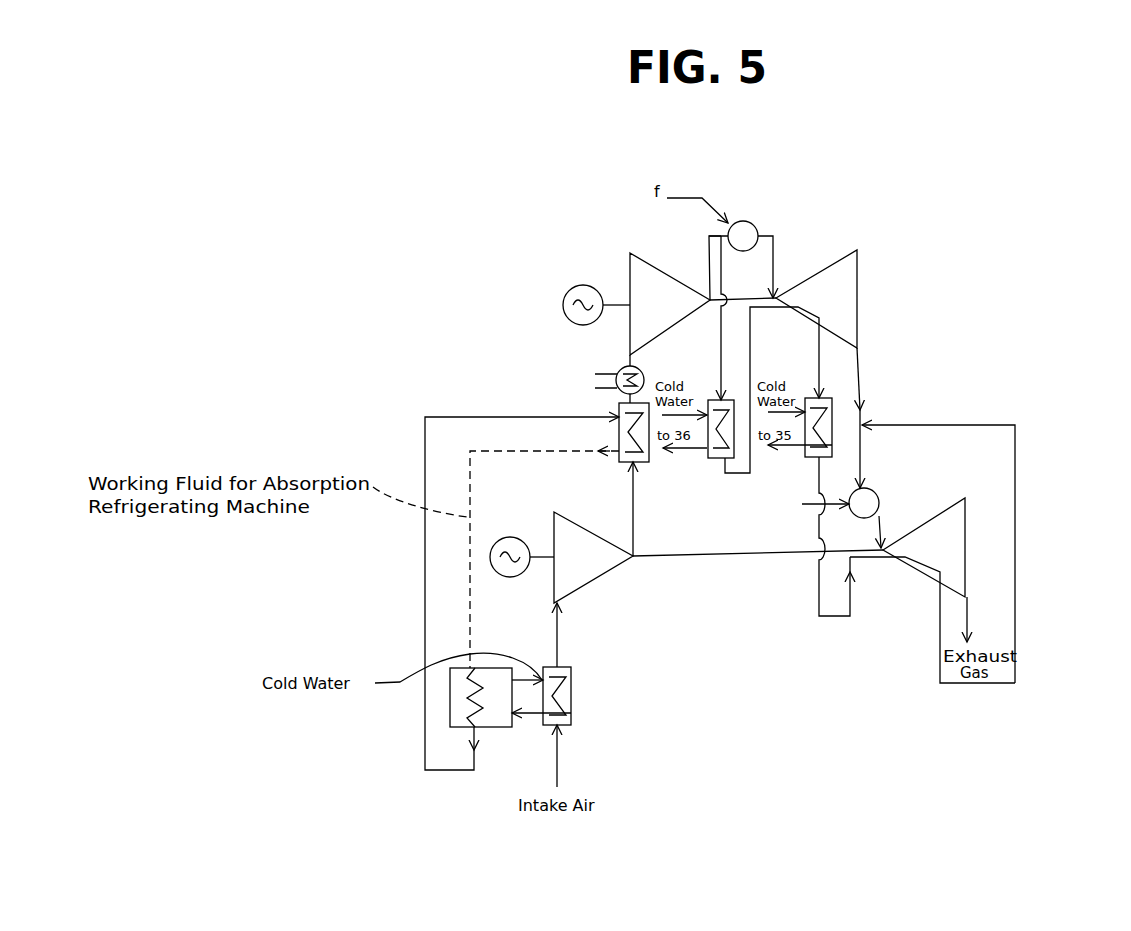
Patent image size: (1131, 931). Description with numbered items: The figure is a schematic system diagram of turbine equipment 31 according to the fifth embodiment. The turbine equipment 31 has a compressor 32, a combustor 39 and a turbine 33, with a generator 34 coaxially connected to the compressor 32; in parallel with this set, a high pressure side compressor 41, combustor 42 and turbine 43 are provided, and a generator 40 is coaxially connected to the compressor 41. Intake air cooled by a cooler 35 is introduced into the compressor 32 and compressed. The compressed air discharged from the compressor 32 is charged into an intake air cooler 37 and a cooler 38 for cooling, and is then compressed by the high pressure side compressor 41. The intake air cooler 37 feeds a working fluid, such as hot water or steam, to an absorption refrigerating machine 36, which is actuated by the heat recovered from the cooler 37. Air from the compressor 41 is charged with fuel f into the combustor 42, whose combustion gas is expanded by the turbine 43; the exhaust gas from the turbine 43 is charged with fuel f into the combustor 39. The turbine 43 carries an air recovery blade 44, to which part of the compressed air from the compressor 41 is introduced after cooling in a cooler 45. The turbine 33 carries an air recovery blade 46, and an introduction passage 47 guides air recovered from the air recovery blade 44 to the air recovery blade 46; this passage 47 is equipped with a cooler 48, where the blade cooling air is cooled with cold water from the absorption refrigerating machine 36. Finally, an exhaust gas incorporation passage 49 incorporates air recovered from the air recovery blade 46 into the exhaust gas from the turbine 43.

The turbine equipment 31 is at (775, 577).
The compressor 32 is at (578, 543).
The turbine 33 is at (948, 540).
The generator 34 is at (490, 552).
The cooler 35 is at (544, 667).
The absorption refrigerating machine 36 is at (500, 727).
The intake air cooler 37 is at (616, 405).
The cooler 38 is at (619, 367).
The combustor 39 is at (873, 488).
The generator 40 is at (566, 292).
The compressor 41 is at (630, 278).
The combustor 42 is at (752, 228).
The turbine 43 is at (842, 288).
The air recovery blade 44 is at (803, 318).
The cooler 45 is at (708, 458).
The air recovery blade 46 is at (917, 567).
The introduction passage 47 is at (837, 617).
The cooler 48 is at (840, 402).
The exhaust gas incorporation passage 49 is at (1017, 587).